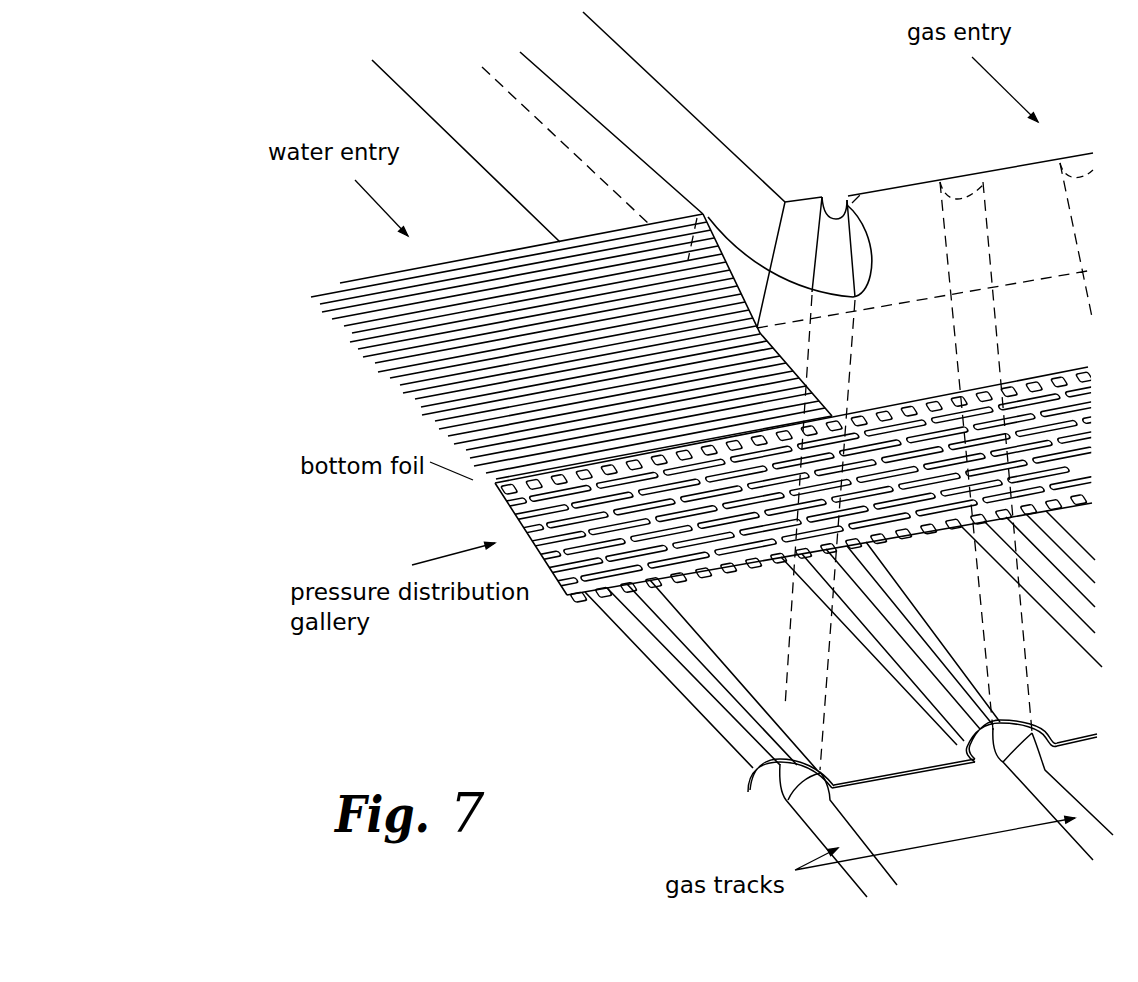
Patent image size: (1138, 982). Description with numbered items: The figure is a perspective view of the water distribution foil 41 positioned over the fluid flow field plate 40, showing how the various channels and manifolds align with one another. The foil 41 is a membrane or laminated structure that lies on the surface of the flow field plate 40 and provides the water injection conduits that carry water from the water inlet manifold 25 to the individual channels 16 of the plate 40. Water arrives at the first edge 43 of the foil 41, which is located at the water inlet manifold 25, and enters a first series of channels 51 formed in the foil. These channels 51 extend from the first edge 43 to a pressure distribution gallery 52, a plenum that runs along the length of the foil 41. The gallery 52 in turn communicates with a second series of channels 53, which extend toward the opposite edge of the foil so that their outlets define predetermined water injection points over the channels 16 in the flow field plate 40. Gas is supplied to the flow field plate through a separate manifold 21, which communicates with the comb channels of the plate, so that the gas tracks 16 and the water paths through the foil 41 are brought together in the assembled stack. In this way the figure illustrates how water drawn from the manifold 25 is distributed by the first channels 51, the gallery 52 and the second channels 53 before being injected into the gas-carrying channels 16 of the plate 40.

The water inlet manifold 25 is at (247, 215).
The manifold 21 is at (825, 123).
The first edge 43 is at (503, 252).
The first series of channels 51 is at (777, 396).
The pressure distribution gallery 52 is at (562, 568).
The second series of channels 53 is at (683, 703).
The water distribution foil 41 is at (887, 748).
The channels 16 is at (806, 812).
The fluid flow field plate 40 is at (1039, 896).